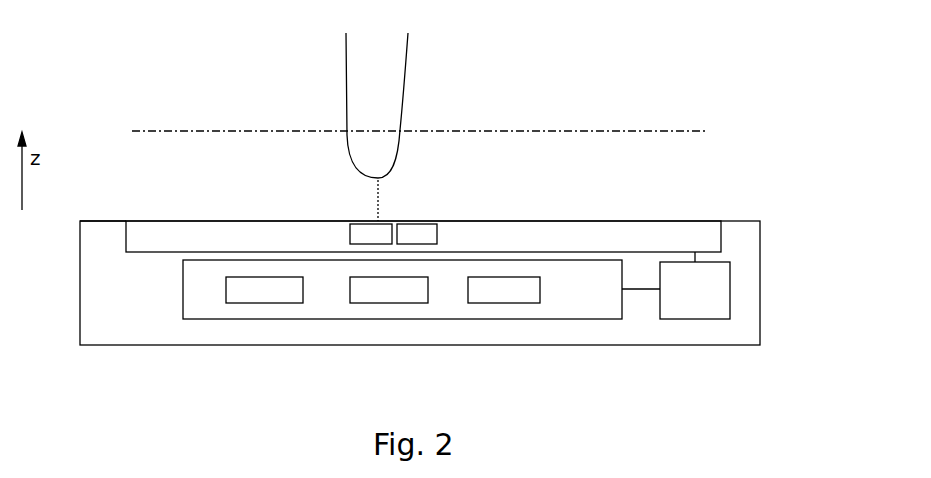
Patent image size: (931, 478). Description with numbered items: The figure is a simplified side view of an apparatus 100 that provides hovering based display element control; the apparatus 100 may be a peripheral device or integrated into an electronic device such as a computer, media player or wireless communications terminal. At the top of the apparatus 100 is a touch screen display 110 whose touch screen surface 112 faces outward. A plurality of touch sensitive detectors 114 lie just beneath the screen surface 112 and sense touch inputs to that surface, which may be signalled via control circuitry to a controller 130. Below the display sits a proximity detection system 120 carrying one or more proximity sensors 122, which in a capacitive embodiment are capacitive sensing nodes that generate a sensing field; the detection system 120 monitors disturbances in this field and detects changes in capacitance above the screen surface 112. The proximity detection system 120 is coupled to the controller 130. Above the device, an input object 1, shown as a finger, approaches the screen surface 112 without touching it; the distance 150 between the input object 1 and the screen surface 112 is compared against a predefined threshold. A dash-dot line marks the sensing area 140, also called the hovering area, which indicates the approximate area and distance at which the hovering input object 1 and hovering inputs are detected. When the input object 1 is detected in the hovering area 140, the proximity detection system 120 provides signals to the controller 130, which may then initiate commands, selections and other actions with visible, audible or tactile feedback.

The input object 1 is at (365, 97).
The apparatus 100 is at (752, 310).
The touch screen display 110 is at (135, 230).
The touch screen surface 112 is at (207, 221).
The touch sensitive detectors 114 is at (415, 237).
The proximity detection system 120 is at (500, 312).
The proximity sensors 122 is at (236, 293).
The controller 130 is at (675, 318).
The sensing area 140 is at (685, 158).
The distance 150 is at (378, 198).